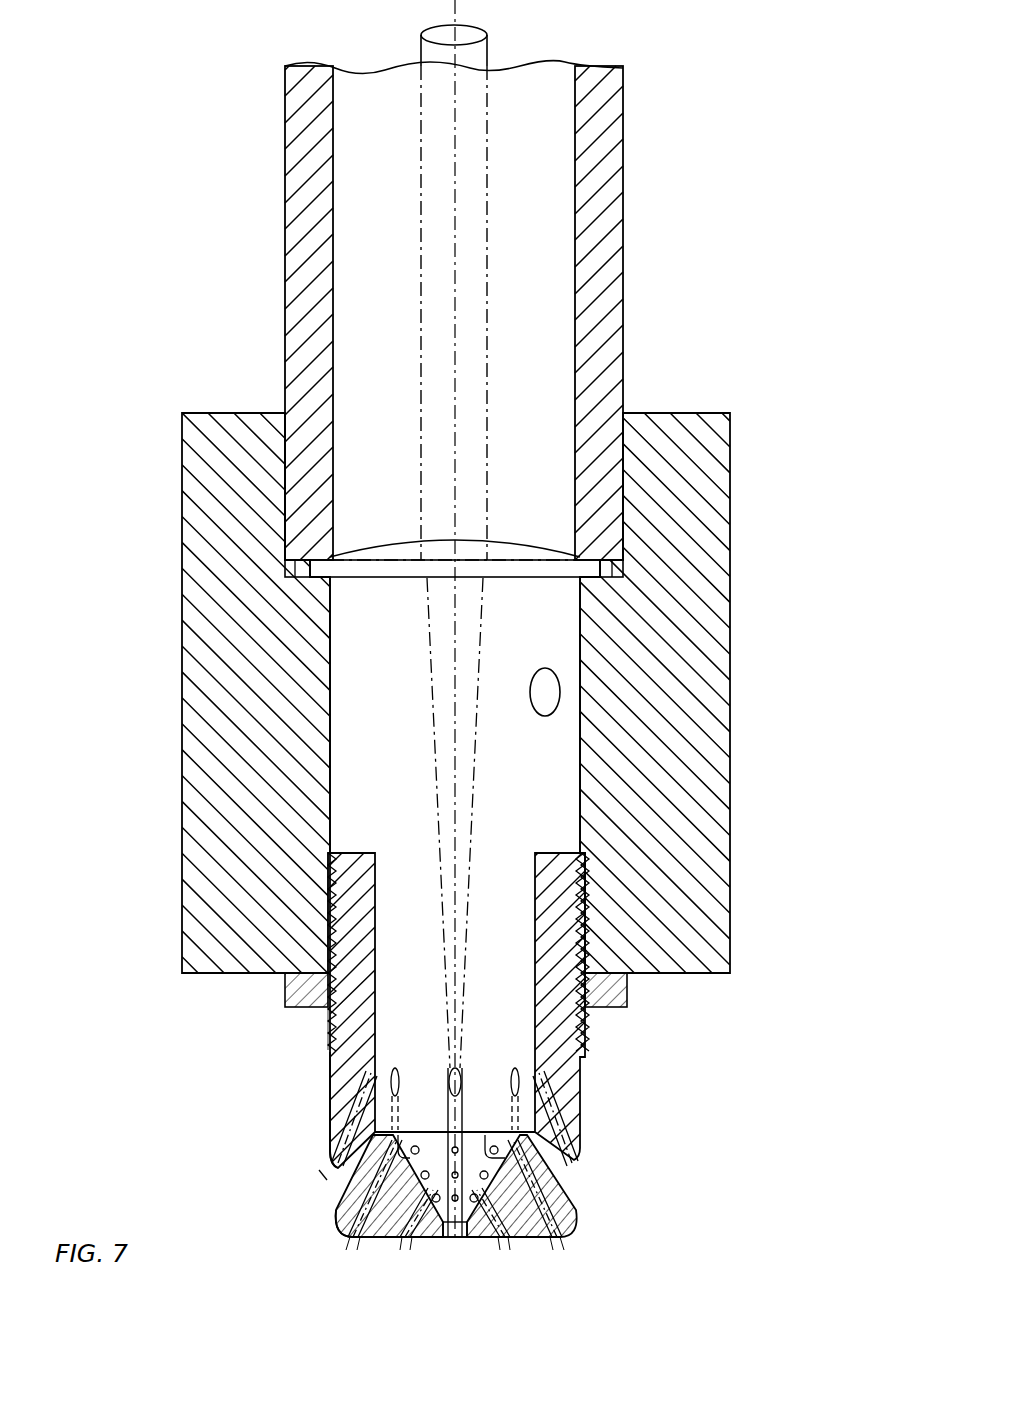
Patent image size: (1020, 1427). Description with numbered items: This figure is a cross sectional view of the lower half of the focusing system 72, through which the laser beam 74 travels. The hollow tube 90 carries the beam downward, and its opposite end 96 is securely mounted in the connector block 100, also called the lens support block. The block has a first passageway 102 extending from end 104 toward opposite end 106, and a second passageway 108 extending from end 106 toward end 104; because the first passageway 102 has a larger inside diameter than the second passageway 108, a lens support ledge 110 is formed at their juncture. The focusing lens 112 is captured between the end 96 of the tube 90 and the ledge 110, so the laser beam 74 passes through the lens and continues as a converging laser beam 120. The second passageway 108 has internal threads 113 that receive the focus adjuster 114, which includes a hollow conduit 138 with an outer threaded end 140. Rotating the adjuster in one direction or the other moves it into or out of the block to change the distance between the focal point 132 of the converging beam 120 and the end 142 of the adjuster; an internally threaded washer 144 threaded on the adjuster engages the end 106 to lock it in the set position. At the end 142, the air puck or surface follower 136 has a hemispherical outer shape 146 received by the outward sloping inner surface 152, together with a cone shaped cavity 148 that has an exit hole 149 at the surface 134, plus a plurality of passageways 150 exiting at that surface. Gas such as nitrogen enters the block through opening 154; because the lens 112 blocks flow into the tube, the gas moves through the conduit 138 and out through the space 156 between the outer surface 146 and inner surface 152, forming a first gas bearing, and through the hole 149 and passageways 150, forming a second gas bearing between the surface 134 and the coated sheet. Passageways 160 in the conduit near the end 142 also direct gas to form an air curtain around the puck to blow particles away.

The focusing system 72 is at (730, 341).
The laser beam 74 is at (487, 203).
The hollow tube 90 is at (625, 228).
The opposite end of the tube 96 is at (292, 565).
The connector block 100 is at (730, 735).
The first passageway 102 is at (292, 494).
The end of the block 104 is at (710, 412).
The opposite end of the block 106 is at (697, 973).
The second passageway 108 is at (572, 652).
The lens support ledge 110 is at (583, 585).
The focusing lens 112 is at (513, 545).
The internal threads 113 is at (590, 912).
The focus adjuster 114 is at (592, 1077).
The converging laser beam 120 is at (427, 650).
The focused point 132 is at (455, 1238).
The surface of the puck 134 is at (370, 1245).
The puck or surface follower 136 is at (592, 1223).
The hollow conduit 138 is at (328, 1085).
The outer threaded end 140 is at (323, 1030).
The end of the focusing adjuster 142 is at (330, 1178).
The internally threaded washer 144 is at (285, 992).
The hemispherical outer shape 146 is at (340, 1205).
The cone shaped cavity 148 is at (483, 1130).
The exit hole 149 is at (448, 1238).
The passageways 150 is at (408, 1238).
The inner surface 152 is at (342, 1143).
The opening 154 is at (540, 692).
The space 156 is at (388, 1123).
The passageways 160 is at (335, 1120).